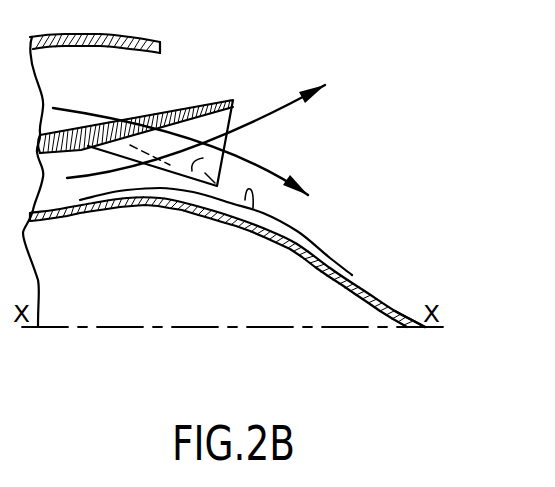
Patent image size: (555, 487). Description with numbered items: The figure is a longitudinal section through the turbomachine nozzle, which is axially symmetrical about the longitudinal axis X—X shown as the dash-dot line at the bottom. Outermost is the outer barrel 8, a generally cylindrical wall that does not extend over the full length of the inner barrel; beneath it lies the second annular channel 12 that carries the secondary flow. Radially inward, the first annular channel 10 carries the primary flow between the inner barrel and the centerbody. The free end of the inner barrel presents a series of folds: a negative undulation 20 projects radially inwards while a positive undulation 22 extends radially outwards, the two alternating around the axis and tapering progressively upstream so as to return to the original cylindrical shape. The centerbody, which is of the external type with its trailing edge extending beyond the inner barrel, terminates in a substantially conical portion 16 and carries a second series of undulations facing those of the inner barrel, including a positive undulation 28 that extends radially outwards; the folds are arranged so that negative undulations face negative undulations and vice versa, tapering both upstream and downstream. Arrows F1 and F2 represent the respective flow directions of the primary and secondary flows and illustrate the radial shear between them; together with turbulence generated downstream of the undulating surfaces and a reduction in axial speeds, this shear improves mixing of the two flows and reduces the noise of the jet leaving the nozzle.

The outer barrel 8 is at (107, 34).
The second annular channel 12 is at (136, 77).
The positive undulation 22 is at (210, 102).
The first annular channel 10 is at (241, 146).
The negative undulation 20 is at (195, 190).
The positive undulation 28 is at (245, 200).
The conical portion 16 is at (403, 310).
The primary flow direction arrow F1 is at (85, 180).
The secondary flow direction arrow F2 is at (96, 112).